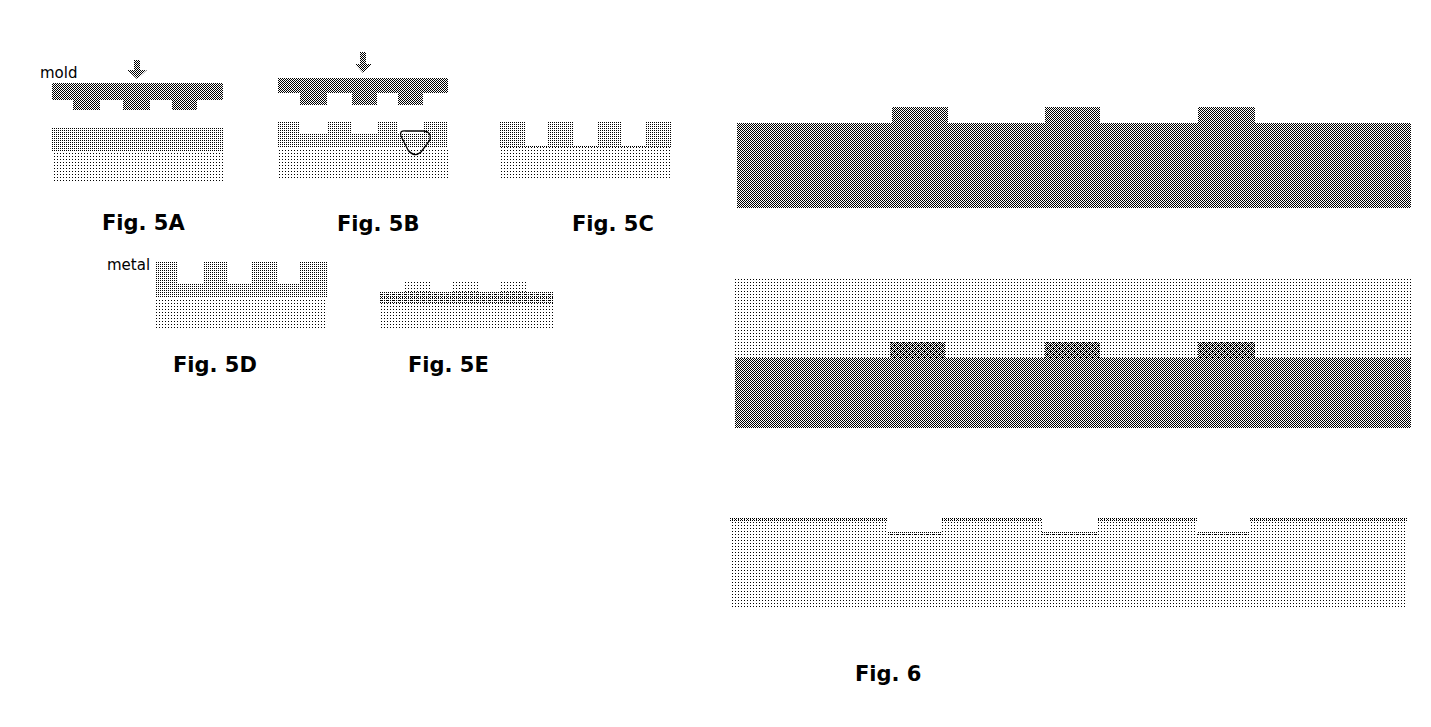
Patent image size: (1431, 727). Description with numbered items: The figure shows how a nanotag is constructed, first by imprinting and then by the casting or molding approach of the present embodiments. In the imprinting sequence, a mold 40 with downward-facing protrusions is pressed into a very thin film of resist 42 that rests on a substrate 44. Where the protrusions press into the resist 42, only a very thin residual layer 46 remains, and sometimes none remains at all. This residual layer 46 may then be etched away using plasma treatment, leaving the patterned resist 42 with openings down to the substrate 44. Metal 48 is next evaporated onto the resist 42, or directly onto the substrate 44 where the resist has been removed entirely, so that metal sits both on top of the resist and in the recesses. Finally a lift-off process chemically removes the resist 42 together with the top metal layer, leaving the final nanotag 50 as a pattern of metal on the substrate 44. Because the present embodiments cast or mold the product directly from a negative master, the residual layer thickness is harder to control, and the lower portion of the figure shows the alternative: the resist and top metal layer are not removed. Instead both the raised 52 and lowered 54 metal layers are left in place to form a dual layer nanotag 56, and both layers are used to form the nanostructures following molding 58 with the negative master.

In FIG. 5A, the mold 40 is at (183, 83).
In FIG. 5B, the mold 40 is at (290, 77).
In FIG. 5A, the resist 42 is at (202, 133).
In FIG. 5B, the resist 42 is at (448, 128).
In FIG. 5C, the resist 42 is at (555, 122).
In FIG. 5D, the resist 42 is at (241, 290).
In FIG. 5A, the substrate 44 is at (198, 173).
In FIG. 5B, the substrate 44 is at (363, 164).
In FIG. 5C, the substrate 44 is at (586, 163).
In FIG. 5D, the substrate 44 is at (313, 322).
In FIG. 5E, the substrate 44 is at (375, 380).
In FIG. 5B, the residual layer 46 is at (415, 155).
In FIG. 5D, the metal 48 is at (357, 280).
In FIG. 5E, the metal 48 is at (410, 281).
In FIG. 5E, the nanotag 50 is at (467, 343).
In FIG. 6, the raised metal layer 52 is at (802, 518).
In FIG. 6, the lowered metal layer 54 is at (908, 538).
In FIG. 6, the dual layer nanotag 56 is at (1070, 518).
In FIG. 6, the molding 58 is at (1022, 352).